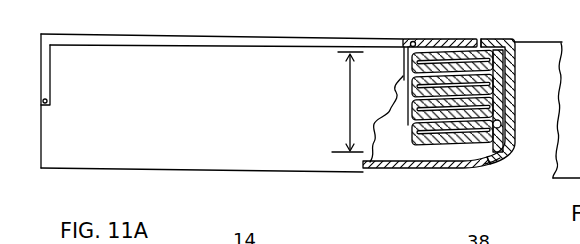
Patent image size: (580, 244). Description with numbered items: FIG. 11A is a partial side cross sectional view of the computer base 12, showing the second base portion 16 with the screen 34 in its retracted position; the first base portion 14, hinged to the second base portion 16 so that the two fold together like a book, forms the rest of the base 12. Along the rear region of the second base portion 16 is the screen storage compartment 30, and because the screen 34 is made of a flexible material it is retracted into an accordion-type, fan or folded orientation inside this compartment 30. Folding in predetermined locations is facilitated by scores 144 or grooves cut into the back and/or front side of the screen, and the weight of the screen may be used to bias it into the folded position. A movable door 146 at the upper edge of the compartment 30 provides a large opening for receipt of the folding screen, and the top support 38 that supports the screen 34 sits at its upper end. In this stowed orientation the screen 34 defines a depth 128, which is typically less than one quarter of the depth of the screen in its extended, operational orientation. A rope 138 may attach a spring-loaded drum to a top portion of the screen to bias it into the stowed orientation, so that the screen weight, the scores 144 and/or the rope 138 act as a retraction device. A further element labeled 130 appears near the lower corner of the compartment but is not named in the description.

The base 12 is at (409, 165).
The first base portion 14 is at (222, 40).
The second base portion 16 is at (338, 172).
The screen storage compartment 30 is at (400, 150).
The screen 34 is at (452, 62).
The top support 38 is at (487, 41).
The depth 128 is at (347, 87).
The rounded corner portion 130 is at (468, 157).
The rope 138 is at (520, 47).
The scores 144 is at (483, 101).
The movable door 146 is at (432, 39).